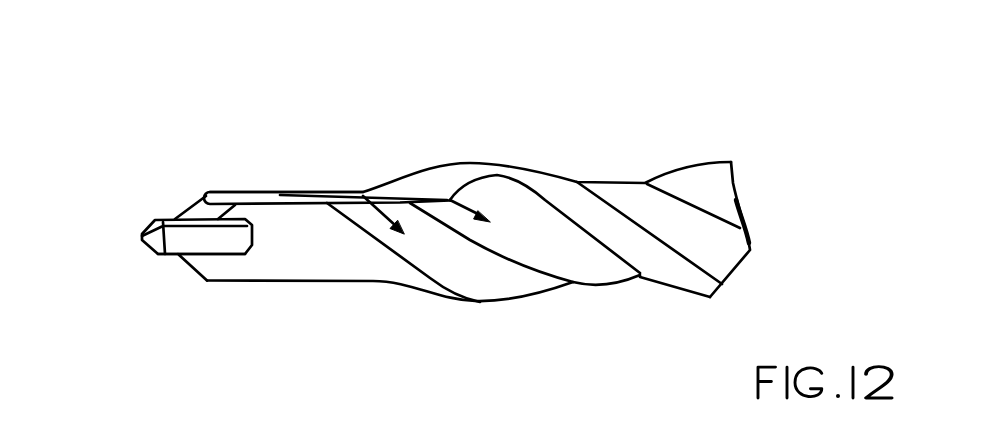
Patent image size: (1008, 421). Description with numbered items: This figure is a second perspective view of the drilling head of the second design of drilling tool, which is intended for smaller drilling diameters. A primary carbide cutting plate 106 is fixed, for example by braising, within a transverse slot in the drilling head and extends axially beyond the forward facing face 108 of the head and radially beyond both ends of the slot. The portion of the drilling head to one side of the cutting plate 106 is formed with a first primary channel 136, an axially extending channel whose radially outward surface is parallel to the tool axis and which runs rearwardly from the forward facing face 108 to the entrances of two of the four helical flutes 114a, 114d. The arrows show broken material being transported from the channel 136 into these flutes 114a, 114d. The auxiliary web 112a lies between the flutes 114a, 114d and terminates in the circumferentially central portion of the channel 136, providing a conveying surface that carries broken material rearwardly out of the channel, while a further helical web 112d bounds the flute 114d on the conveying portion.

The primary carbide cutting plate 106 is at (157, 200).
The forward facing face 108 is at (170, 308).
The first primary channel 136 is at (327, 145).
The helical flute 114a is at (392, 294).
The helical flute 114d is at (533, 166).
The auxiliary web 112a is at (493, 297).
The helical web 112d is at (634, 184).